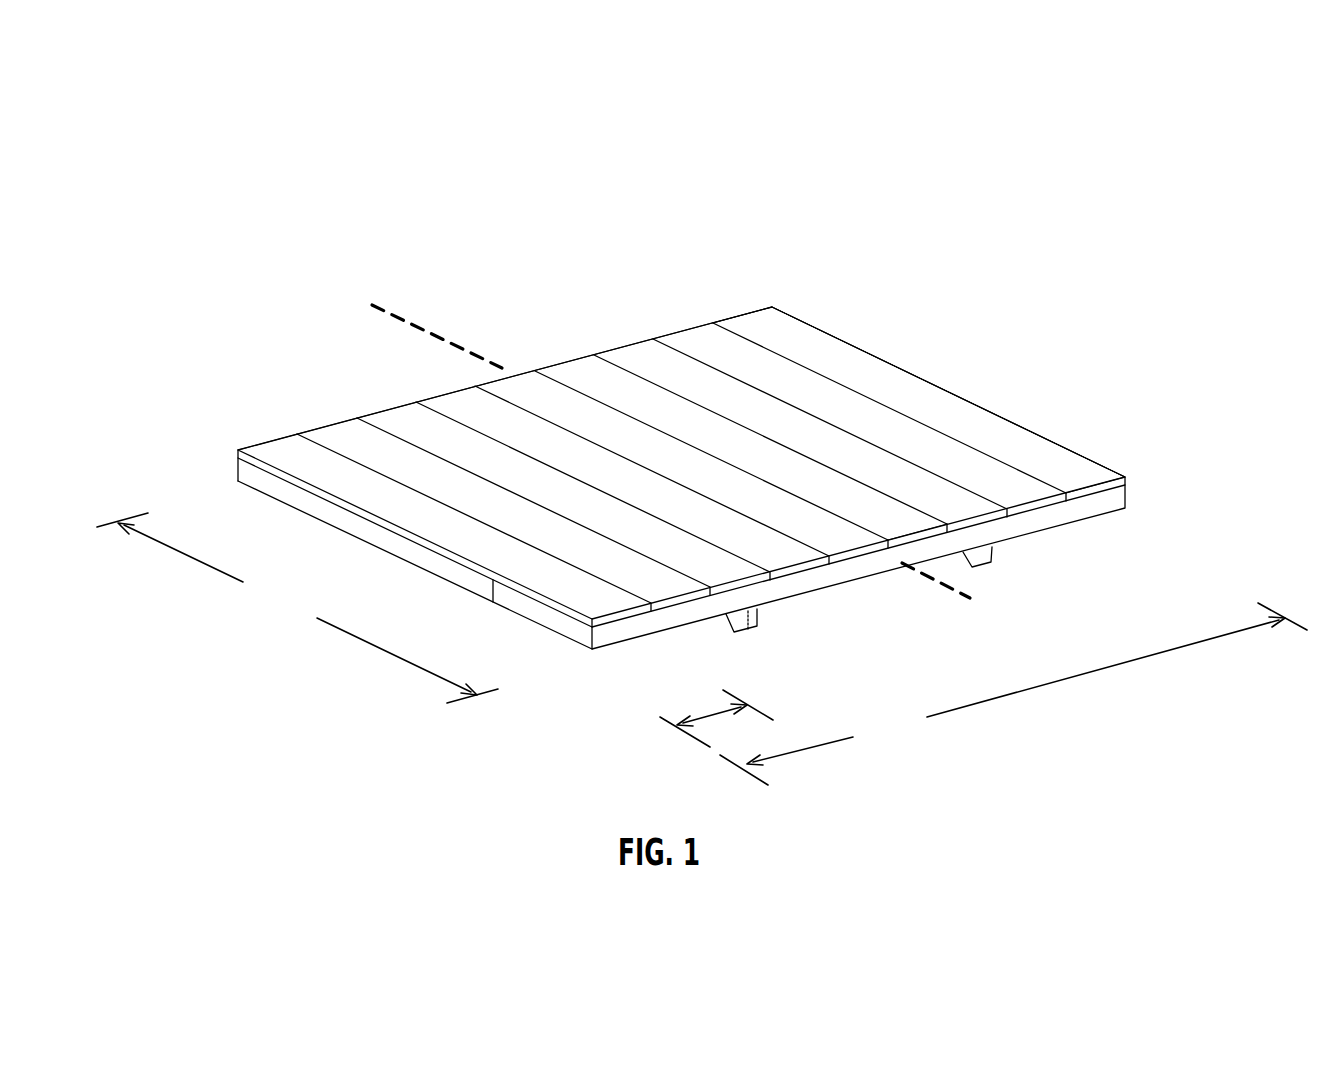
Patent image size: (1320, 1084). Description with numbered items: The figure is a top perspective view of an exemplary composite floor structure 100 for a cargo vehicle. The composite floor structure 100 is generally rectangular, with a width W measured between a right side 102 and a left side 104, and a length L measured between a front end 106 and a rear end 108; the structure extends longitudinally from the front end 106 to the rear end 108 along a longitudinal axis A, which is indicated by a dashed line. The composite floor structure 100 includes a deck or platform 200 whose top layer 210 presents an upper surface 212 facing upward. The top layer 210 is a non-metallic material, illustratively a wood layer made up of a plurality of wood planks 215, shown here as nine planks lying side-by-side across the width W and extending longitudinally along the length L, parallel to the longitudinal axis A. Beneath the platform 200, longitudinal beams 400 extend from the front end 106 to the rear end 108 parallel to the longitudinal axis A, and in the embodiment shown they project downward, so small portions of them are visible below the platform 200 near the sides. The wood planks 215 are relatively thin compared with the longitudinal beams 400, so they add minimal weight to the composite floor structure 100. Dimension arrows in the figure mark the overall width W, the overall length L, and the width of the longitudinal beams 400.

The composite floor structure 100 is at (934, 245).
The right side 102 is at (1093, 462).
The left side 104 is at (248, 470).
The front end 106 is at (367, 414).
The rear end 108 is at (1030, 522).
The platform 200 is at (383, 367).
The top layer 210 is at (787, 330).
The upper surface 212 is at (927, 449).
The wood planks 215 is at (710, 350).
The longitudinal beams 400 is at (755, 620).